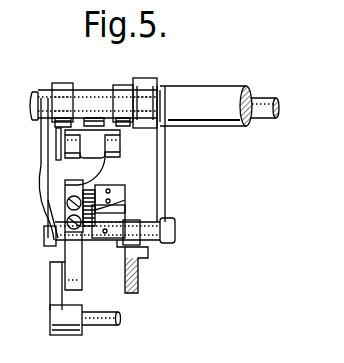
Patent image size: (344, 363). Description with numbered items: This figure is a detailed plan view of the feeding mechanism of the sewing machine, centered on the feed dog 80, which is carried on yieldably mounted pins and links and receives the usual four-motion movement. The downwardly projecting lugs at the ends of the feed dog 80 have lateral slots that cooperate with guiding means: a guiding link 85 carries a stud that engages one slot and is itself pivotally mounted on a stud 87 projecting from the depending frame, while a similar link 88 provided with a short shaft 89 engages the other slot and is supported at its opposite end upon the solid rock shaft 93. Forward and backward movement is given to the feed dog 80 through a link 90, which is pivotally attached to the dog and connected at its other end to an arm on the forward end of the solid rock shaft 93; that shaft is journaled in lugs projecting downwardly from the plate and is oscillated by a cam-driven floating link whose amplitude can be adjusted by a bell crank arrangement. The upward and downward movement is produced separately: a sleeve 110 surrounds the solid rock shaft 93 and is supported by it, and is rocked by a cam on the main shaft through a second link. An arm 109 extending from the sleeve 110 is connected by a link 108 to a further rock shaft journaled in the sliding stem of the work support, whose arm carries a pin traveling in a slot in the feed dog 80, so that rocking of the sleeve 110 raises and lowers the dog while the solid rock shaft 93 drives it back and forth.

The feed dog 80 is at (125, 212).
The guiding link 85 is at (55, 290).
The stud 87 is at (91, 313).
The link 88 is at (121, 130).
The short shaft 89 is at (113, 165).
The link 90 is at (40, 173).
The solid rock shaft 93 is at (276, 103).
The link 108 is at (166, 176).
The arm 109 is at (150, 84).
The sleeve 110 is at (232, 87).